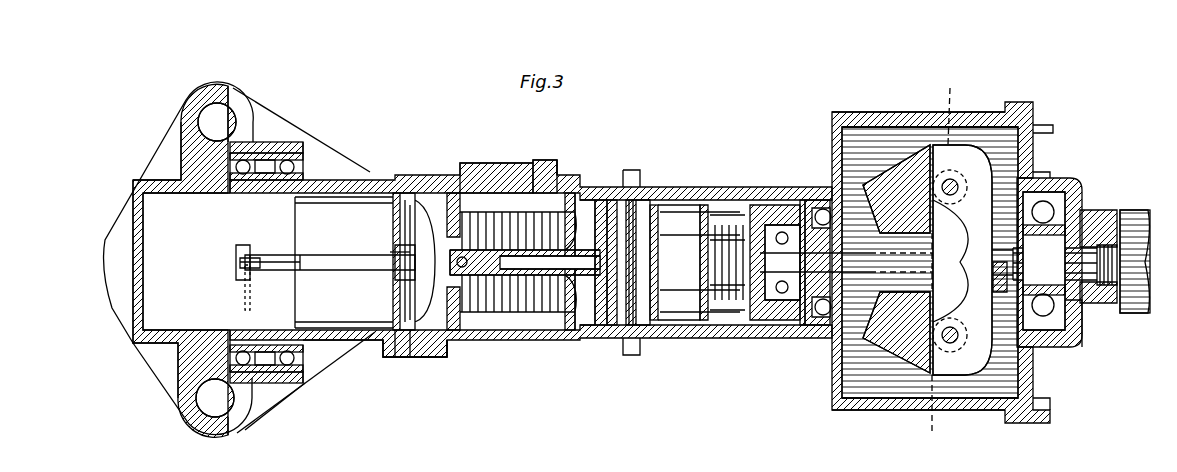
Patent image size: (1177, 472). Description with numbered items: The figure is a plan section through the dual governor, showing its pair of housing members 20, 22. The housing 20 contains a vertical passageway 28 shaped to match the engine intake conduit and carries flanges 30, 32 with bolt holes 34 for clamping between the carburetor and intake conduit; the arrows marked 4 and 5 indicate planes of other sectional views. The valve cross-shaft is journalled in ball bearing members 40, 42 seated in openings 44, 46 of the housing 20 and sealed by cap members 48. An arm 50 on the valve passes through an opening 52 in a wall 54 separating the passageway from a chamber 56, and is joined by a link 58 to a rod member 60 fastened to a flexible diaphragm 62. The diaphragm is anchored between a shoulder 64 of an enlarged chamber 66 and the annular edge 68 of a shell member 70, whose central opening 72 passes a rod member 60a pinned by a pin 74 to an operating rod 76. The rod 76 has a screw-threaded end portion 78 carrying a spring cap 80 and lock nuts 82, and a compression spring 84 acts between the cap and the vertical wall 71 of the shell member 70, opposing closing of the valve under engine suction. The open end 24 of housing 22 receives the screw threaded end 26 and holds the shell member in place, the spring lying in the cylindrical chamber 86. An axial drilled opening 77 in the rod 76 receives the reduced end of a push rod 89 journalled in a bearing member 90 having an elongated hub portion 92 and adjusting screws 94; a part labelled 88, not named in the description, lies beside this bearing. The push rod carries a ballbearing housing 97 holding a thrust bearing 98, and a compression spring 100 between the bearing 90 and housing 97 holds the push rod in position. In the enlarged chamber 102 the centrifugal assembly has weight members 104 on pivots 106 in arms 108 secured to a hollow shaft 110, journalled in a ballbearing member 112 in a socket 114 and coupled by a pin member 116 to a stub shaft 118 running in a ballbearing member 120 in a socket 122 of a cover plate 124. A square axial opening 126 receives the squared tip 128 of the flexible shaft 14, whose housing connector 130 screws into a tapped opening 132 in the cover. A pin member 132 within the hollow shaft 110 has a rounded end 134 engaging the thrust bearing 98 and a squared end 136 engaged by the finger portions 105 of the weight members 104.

The section line 4- 4 is at (72, 272).
The section line 5- 5 is at (42, 272).
The flexible shaft 14 is at (1135, 313).
The housing member 20 is at (418, 178).
The housing member 22 is at (680, 200).
The open end 24 is at (478, 342).
The screw threaded end 26 is at (555, 160).
The vertical passageway 28 is at (135, 310).
The flange 30 is at (210, 428).
The flange 32 is at (205, 115).
The bolt holes 34 is at (207, 126).
The ball bearing member 40 is at (300, 145).
The ball bearing member 42 is at (303, 392).
The opening 44 is at (300, 150).
The opening 46 is at (335, 360).
The cap members 48 is at (280, 120).
The arm 50 is at (260, 262).
The opening 52 is at (270, 280).
The wall 54 is at (290, 226).
The chamber 56 is at (350, 195).
The link 58 is at (285, 250).
The rod member 60 is at (395, 270).
The rod member 60a is at (415, 250).
The flexible diaphragm 62 is at (452, 192).
The shoulder 64 is at (405, 192).
The enlarged chamber 66 is at (412, 350).
The annular edge 68 is at (398, 345).
The shell member 70 is at (478, 167).
The vertical wall 71 is at (535, 172).
The central opening 72 is at (448, 350).
The pin 74 is at (440, 265).
The operating rod 76 is at (505, 330).
The axial drilled opening 77 is at (530, 330).
The screw-threaded end portion 78 is at (572, 332).
The spring cap 80 is at (600, 200).
The lock nuts 82 is at (615, 200).
The compression spring 84 is at (592, 200).
The cylindrical chamber 86 is at (580, 175).
The washer 88 is at (606, 330).
The push rod 89 is at (690, 325).
The bearing member 90 is at (660, 330).
The elongated hub portion 92 is at (705, 200).
The adjusting screws 94 is at (635, 198).
The ballbearing housing 97 is at (760, 200).
The thrust bearing 98 is at (762, 322).
The compression spring 100 is at (740, 200).
The enlarged chamber 102 is at (838, 405).
The weight members 104 is at (914, 165).
The finger portions 105 is at (963, 261).
The pivots 106 is at (975, 145).
The arms 108 is at (965, 251).
The hollow shaft 110 is at (885, 259).
The ballbearing member 112 is at (805, 325).
The socket 114 is at (810, 200).
The pin member 116 is at (1008, 325).
The stub shaft 118 is at (1082, 200).
The ballbearing member 120 is at (1055, 200).
The socket 122 is at (1050, 174).
The cover plate 124 is at (1054, 128).
The square axial opening 126 is at (1052, 352).
The squared tip 128 is at (1083, 333).
The flexible shaft housing connector 130 is at (1100, 303).
The pin member 132 is at (1118, 204).
The rounded end 134 is at (815, 261).
The squared end 136 is at (974, 262).